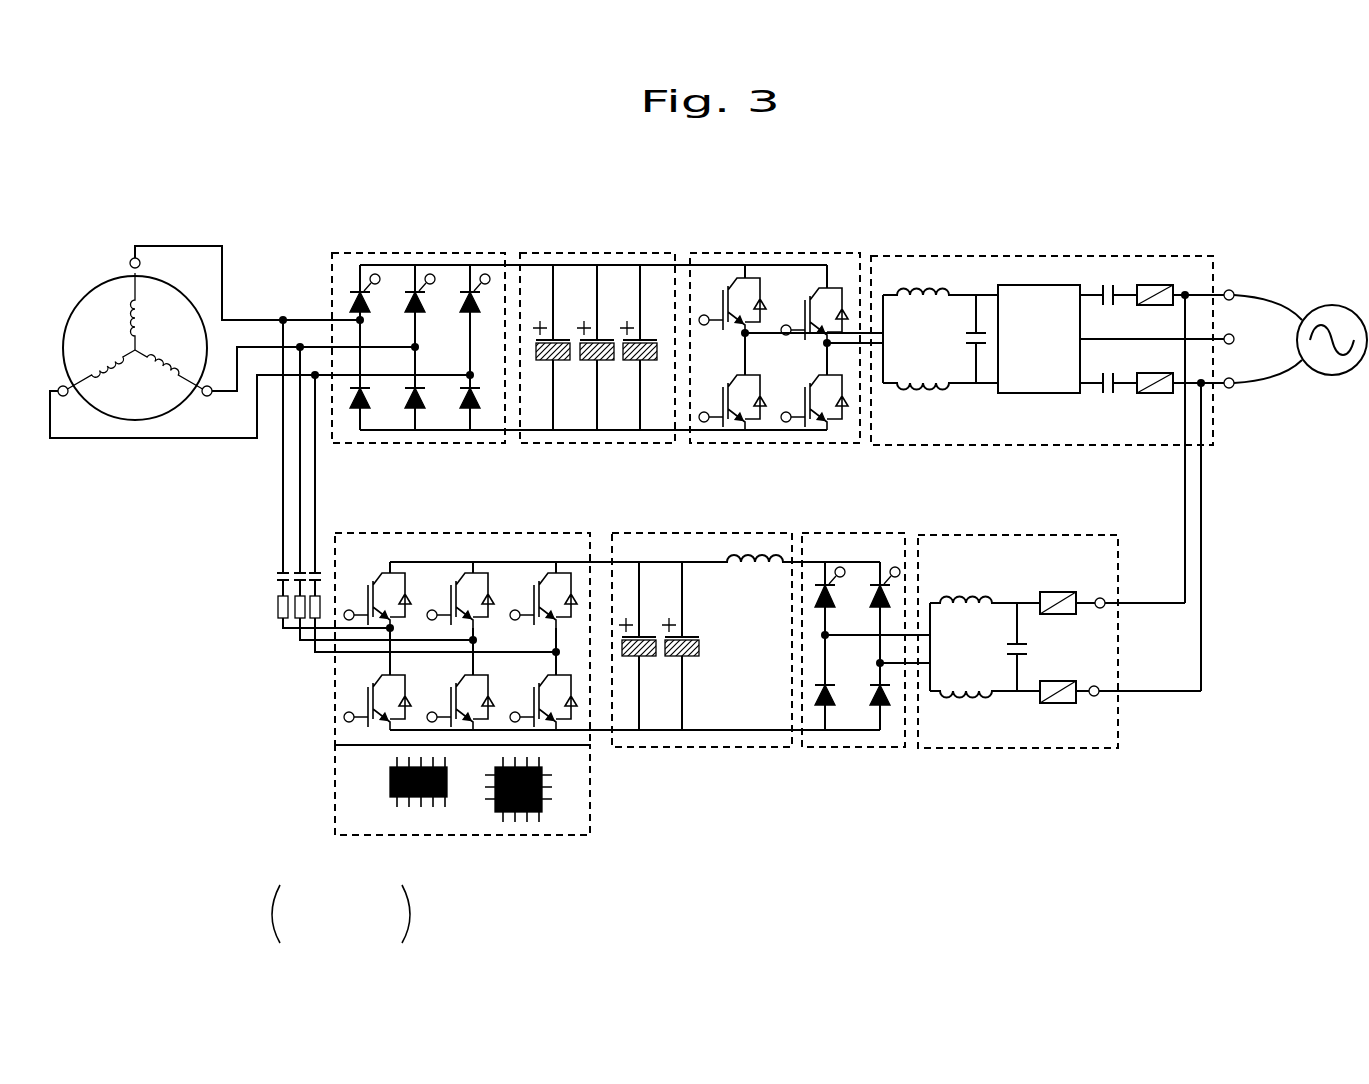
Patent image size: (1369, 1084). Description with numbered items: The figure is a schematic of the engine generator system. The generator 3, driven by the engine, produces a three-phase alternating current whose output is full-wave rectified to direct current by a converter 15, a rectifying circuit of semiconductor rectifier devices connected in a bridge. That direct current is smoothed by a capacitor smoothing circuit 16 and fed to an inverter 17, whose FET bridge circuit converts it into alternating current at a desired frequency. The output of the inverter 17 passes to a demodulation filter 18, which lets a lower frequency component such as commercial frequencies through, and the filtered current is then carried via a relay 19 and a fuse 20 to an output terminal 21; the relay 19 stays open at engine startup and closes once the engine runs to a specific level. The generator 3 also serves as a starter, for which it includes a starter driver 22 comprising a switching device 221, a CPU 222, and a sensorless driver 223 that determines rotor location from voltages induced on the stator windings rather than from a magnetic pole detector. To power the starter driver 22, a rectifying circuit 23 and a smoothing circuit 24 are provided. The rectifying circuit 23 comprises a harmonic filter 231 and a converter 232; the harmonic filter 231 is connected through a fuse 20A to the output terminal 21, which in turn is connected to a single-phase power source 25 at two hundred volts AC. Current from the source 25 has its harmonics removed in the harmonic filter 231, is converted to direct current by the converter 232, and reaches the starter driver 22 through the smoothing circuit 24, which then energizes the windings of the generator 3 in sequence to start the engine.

The generator 3 is at (100, 425).
The converter 15 is at (365, 253).
The capacitor smoothing circuit 16 is at (582, 253).
The inverter 17 is at (756, 253).
The demodulation filter 18 is at (1078, 434).
The relay 19 is at (1108, 400).
The fuse 20 is at (1140, 373).
The fuse 20A is at (1052, 614).
The output terminal 21 is at (1237, 298).
The starter driver 22 is at (459, 844).
The switching device 221 is at (590, 640).
The CPU 222 is at (545, 812).
The sensorless driver 223 is at (400, 806).
The rectifying circuit 23 is at (1030, 691).
The harmonic filter 231 is at (1090, 666).
The converter 232 is at (822, 750).
The smoothing circuit 24 is at (695, 748).
The single-phase power source 25 is at (1332, 375).